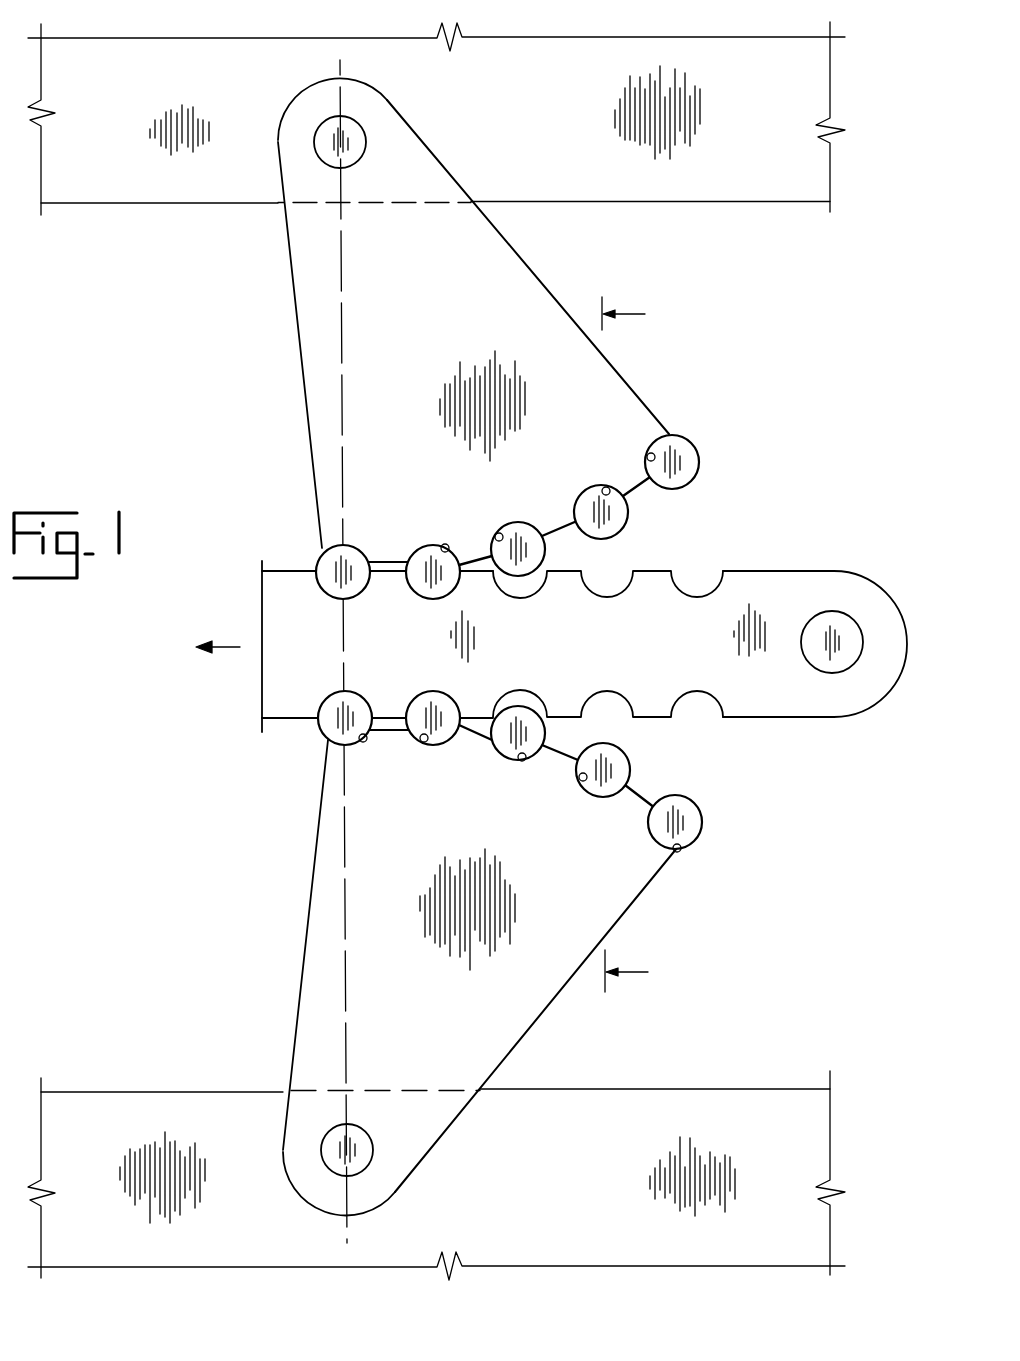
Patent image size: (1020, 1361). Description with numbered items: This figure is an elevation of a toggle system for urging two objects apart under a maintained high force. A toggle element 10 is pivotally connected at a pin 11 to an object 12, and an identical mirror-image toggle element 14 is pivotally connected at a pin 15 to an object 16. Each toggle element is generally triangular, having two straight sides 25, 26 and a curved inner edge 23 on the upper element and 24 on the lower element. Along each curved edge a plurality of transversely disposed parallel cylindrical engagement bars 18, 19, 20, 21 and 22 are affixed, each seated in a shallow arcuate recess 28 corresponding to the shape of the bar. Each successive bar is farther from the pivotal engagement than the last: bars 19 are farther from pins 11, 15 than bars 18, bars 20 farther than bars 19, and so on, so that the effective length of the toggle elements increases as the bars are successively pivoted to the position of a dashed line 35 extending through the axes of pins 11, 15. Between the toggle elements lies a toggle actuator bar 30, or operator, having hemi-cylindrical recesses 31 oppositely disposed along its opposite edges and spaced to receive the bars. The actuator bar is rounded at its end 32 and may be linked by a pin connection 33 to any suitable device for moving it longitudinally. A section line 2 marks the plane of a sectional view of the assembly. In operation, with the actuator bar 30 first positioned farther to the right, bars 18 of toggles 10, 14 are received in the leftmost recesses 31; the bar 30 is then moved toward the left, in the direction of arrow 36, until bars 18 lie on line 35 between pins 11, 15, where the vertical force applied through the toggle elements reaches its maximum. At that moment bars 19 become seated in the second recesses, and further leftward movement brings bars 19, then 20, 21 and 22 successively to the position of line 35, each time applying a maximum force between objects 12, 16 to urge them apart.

The section line 2- 2 is at (634, 644).
The toggle element 10 is at (439, 313).
The pin 11 is at (313, 152).
The object 12 is at (605, 202).
The toggle element 14 is at (456, 977).
The pin 15 is at (333, 1130).
The object 16 is at (602, 1089).
The engagement bar 18 is at (365, 546).
The engagement bar 19 is at (433, 545).
The engagement bar 20 is at (519, 524).
The engagement bar 21 is at (595, 494).
The engagement bar 22 is at (650, 452).
The curved inner edge 23 is at (636, 482).
The curved inner edge 24 is at (658, 792).
The straight side 25 is at (300, 378).
The straight side 26 is at (640, 383).
The shallow arcuate recess 28 is at (648, 458).
The toggle actuator bar 30 is at (584, 632).
The hemi-cylindrical recess 31 is at (672, 573).
The rounded end 32 is at (878, 580).
The pin connection 33 is at (832, 612).
The line 35 is at (345, 420).
The arrow 36 is at (225, 650).